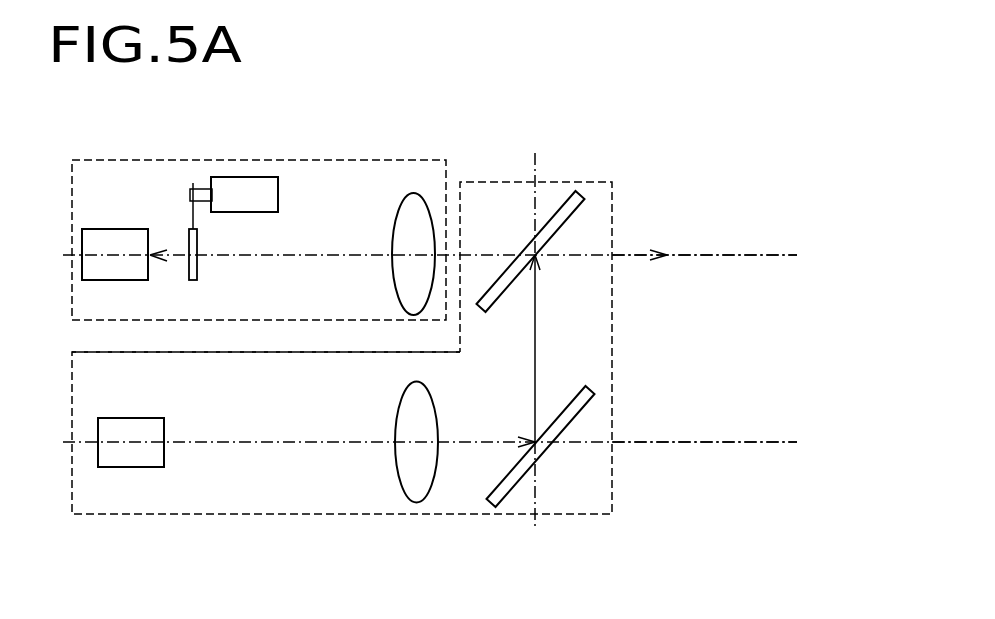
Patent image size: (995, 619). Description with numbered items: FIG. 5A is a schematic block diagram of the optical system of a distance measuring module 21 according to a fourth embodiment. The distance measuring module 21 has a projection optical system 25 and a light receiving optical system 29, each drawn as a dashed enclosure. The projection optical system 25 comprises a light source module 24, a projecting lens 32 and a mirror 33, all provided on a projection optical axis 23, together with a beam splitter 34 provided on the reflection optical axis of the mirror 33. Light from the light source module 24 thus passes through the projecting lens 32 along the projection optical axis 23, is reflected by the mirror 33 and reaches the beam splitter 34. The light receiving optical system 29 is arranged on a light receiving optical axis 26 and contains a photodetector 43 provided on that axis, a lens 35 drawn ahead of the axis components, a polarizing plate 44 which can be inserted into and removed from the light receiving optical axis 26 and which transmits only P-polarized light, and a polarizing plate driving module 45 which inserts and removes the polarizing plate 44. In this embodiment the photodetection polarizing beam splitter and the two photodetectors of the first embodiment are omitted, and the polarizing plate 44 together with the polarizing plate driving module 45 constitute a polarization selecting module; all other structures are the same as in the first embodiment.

The distance measuring module 21 is at (691, 141).
The projection optical axis 23 is at (658, 442).
The light source module 24 is at (131, 418).
The projection optical system 25 is at (328, 514).
The light receiving optical axis 26 is at (763, 258).
The light receiving optical system 29 is at (360, 160).
The projecting lens 32 is at (395, 412).
The mirror 33 is at (562, 402).
The beam splitter 34 is at (503, 303).
The imaging lens 35 is at (395, 222).
The photodetector 43 is at (123, 229).
The polarizing plate 44 is at (198, 267).
The polarizing plate driving module 45 is at (278, 192).